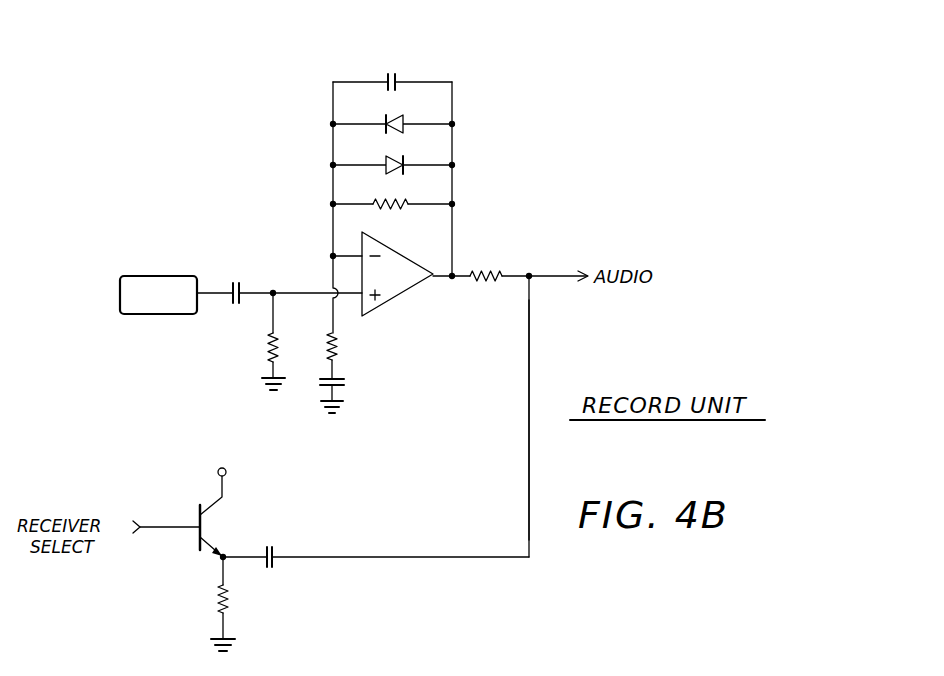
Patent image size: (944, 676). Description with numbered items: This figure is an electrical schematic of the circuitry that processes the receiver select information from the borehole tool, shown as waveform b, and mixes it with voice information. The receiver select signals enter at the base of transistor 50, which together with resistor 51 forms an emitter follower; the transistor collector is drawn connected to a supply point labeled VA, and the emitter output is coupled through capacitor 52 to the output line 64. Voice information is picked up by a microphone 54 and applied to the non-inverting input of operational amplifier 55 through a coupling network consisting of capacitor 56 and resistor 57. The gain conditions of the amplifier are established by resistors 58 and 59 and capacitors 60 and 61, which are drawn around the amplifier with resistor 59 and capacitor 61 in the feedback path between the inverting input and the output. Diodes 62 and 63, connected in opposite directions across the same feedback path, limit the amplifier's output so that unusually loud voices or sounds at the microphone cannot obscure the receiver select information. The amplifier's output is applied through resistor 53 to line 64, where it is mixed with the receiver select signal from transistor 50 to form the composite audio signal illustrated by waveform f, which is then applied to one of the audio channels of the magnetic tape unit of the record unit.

The transistor 50 is at (205, 528).
The resistor 51 is at (233, 593).
The capacitor 52 is at (277, 547).
The resistor 53 is at (487, 267).
The microphone 54 is at (155, 275).
The operational amplifier 55 is at (400, 293).
The capacitor 56 is at (243, 286).
The resistor 57 is at (265, 350).
The resistor 58 is at (343, 347).
The resistor 59 is at (388, 212).
The capacitor 60 is at (345, 385).
The capacitor 61 is at (397, 72).
The diode 62 is at (392, 158).
The diode 63 is at (392, 118).
The output line 64 is at (531, 342).
The composite audio signal waveform f is at (543, 275).
The receiver select waveform b is at (177, 522).
The supply voltage VA is at (226, 459).